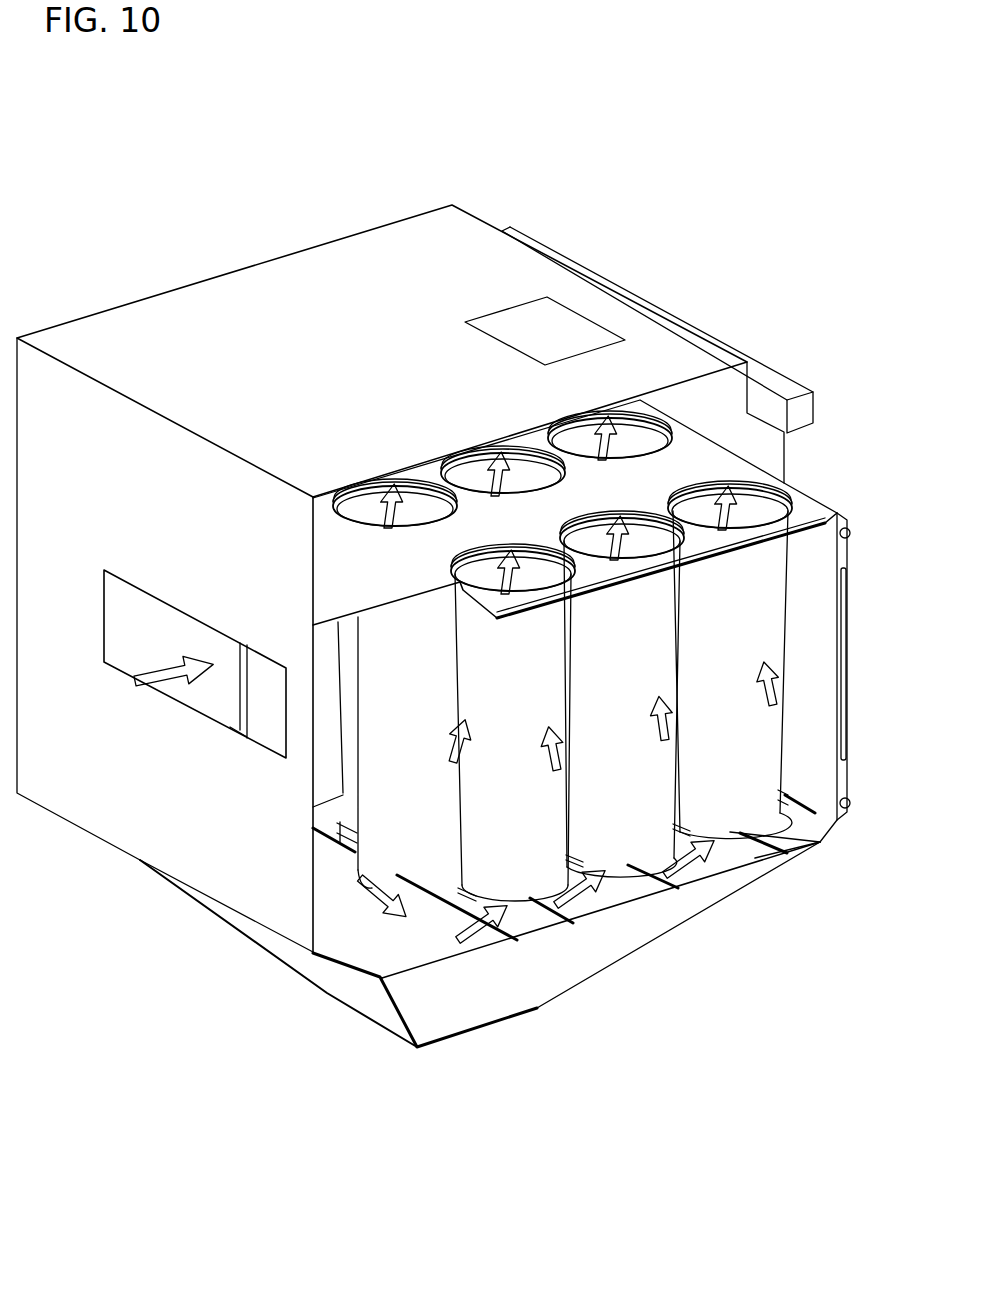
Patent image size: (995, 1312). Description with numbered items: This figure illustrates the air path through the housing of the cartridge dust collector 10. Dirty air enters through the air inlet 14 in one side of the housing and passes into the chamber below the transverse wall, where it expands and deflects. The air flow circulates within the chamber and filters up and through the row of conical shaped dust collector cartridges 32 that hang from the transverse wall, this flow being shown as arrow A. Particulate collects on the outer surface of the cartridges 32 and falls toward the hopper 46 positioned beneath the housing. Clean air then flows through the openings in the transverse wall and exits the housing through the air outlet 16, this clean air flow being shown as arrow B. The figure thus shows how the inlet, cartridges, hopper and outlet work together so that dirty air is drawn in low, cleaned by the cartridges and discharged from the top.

The cartridge dust collector 10 is at (457, 262).
The air inlet 14 is at (145, 607).
The air outlet 16 is at (568, 331).
The conical shaped dust collector cartridges 32 is at (766, 822).
The hopper 46 is at (460, 997).
The arrow A is at (155, 673).
The arrow B is at (585, 422).